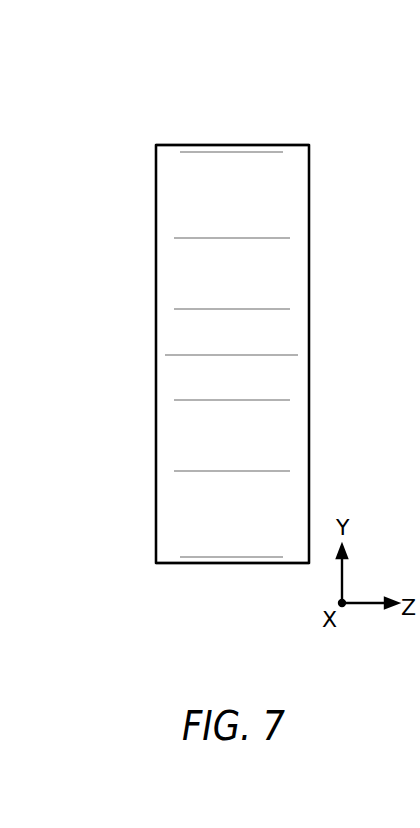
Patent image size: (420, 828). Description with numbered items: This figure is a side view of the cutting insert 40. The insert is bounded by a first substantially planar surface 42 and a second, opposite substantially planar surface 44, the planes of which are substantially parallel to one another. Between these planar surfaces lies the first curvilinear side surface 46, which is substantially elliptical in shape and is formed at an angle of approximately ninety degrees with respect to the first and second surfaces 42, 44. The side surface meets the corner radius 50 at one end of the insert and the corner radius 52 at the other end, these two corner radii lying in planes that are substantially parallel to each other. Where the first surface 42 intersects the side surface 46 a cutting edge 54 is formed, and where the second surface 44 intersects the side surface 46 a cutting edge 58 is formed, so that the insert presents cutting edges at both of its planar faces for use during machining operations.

The cutting insert 40 is at (63, 107).
The first substantially planar surface 42 is at (155, 392).
The second substantially planar surface 44 is at (309, 392).
The first curvilinear side surface 46 is at (217, 208).
The corner radius 50 is at (283, 144).
The corner radius 52 is at (190, 564).
The cutting edge 54 is at (155, 271).
The cutting edge 58 is at (309, 271).